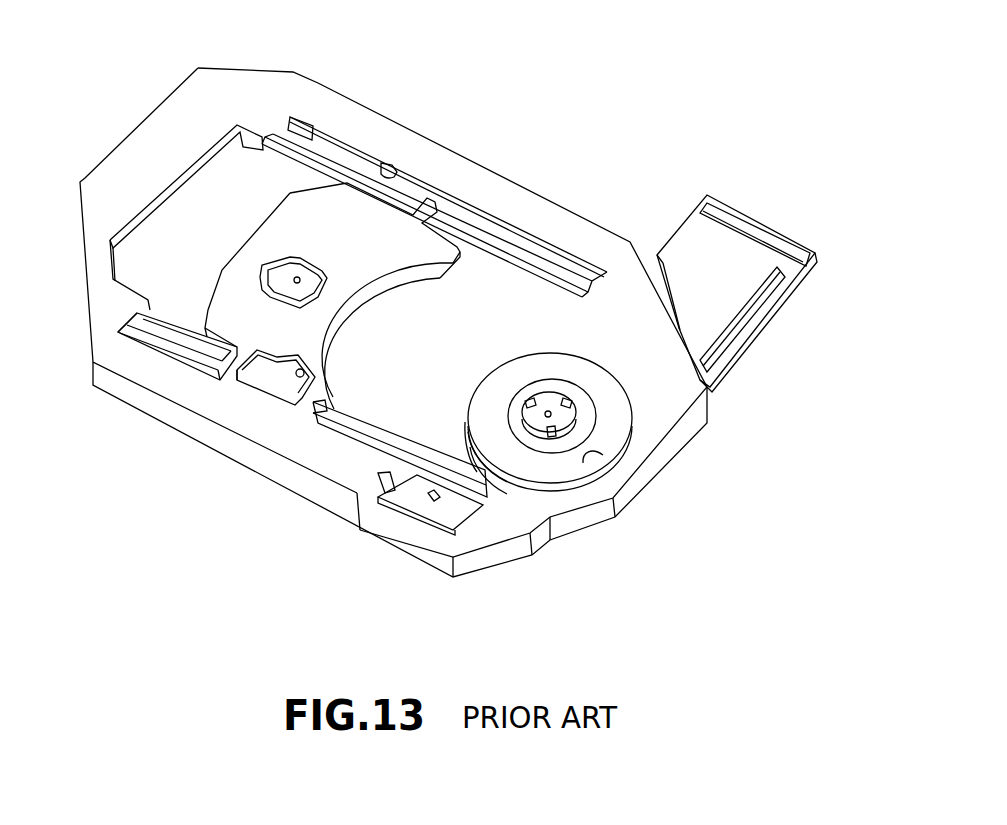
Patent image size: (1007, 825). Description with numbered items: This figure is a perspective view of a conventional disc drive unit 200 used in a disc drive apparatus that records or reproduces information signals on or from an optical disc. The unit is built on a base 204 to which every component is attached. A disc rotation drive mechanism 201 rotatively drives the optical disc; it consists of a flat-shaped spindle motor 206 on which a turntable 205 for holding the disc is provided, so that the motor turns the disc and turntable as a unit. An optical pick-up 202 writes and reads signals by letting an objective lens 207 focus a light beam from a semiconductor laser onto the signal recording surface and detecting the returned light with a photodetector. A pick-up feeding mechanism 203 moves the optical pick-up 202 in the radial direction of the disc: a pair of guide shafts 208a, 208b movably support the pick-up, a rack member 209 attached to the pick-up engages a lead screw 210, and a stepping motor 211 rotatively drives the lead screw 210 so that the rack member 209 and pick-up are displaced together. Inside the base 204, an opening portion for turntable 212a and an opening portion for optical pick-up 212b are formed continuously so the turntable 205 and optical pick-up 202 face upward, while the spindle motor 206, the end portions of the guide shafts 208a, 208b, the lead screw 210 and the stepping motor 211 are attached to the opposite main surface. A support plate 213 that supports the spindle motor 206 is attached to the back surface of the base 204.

The disc drive unit 200 is at (121, 80).
The disc rotation drive mechanism 201 is at (642, 413).
The optical pick-up 202 is at (250, 235).
The pick-up feeding mechanism 203 is at (337, 450).
The base 204 is at (473, 161).
The turntable 205 is at (531, 373).
The spindle motor 206 is at (467, 437).
The objective lens 207 is at (297, 279).
The guide shaft 208a is at (202, 348).
The guide shaft 208b is at (498, 247).
The rack member 209 is at (272, 380).
The lead screw 210 is at (385, 480).
The stepping motor 211 is at (440, 510).
The opening portion for turntable 212a is at (600, 452).
The opening portion for optical pick-up 212b is at (393, 172).
The support plate 213 is at (770, 322).